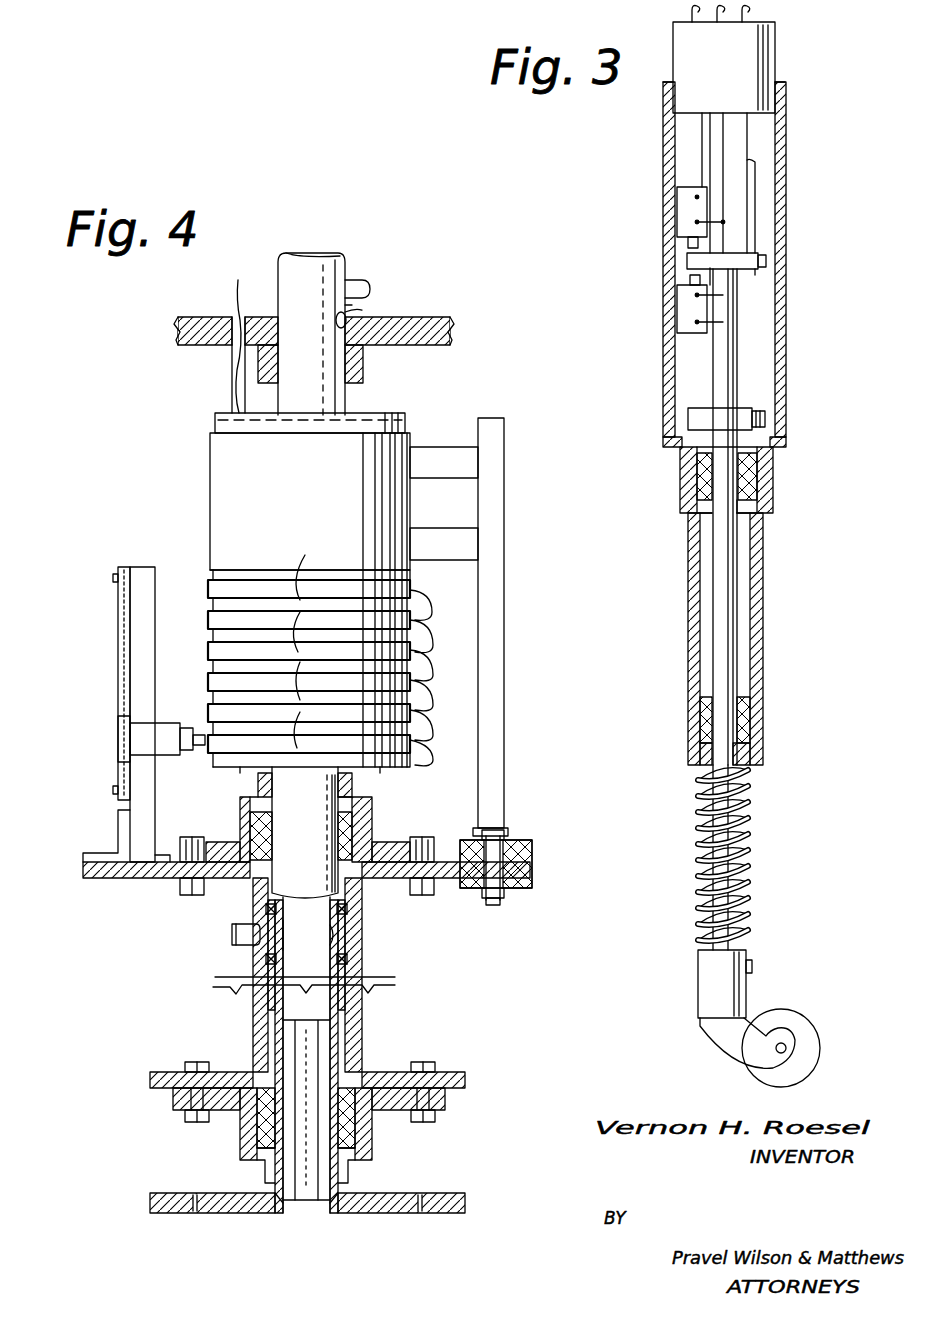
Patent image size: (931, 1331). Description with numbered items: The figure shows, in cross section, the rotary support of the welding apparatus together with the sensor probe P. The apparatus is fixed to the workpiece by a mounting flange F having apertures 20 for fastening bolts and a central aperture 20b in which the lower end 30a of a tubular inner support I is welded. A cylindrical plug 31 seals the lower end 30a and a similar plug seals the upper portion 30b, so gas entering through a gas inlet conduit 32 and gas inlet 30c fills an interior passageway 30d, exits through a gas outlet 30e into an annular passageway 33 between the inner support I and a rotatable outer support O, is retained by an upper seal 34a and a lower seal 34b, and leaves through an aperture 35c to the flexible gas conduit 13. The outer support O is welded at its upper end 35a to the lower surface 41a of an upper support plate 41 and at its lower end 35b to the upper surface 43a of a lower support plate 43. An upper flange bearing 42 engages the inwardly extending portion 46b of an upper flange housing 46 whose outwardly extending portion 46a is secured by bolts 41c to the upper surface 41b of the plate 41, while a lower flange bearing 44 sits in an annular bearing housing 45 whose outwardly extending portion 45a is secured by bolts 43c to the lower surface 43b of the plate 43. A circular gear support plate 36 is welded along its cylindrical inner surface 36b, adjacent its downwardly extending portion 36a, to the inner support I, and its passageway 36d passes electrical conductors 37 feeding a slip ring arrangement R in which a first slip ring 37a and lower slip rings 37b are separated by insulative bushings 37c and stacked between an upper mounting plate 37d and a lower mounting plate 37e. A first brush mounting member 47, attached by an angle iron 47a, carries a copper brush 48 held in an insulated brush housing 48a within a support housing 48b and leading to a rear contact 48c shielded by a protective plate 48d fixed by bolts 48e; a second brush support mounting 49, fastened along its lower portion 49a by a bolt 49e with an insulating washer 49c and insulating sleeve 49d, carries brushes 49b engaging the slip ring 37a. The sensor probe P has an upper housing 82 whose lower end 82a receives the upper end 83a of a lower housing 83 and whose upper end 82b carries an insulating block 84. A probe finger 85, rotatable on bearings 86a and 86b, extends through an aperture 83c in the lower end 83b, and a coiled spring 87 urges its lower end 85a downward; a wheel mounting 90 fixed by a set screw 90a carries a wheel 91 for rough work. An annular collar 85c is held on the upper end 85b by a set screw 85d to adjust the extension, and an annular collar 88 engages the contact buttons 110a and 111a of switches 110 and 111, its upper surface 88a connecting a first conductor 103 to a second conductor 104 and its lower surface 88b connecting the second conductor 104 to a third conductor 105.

In FIG. 4, the flexible gas conduit 13 is at (232, 932).
In FIG. 4, the apertures 20 is at (197, 1195).
In FIG. 4, the aperture 20b is at (332, 1213).
In FIG. 4, the lower end of inner support 30a is at (270, 1214).
In FIG. 4, the upper portion of inner support 30b is at (290, 250).
In FIG. 4, the gas inlet 30c is at (338, 312).
In FIG. 4, the interior passageway 30d is at (305, 905).
In FIG. 4, the gas outlet 30e is at (336, 936).
In FIG. 4, the cylindrical plug 31 is at (312, 1040).
In FIG. 4, the gas inlet conduit 32 is at (358, 283).
In FIG. 4, the annular passageway 33 is at (348, 942).
In FIG. 4, the upper O-ring 34a is at (348, 908).
In FIG. 4, the lower O-ring 34b is at (348, 960).
In FIG. 4, the upper end of outer support 35a is at (253, 906).
In FIG. 4, the lower end of outer support 35b is at (255, 1030).
In FIG. 4, the aperture 35c is at (258, 958).
In FIG. 4, the circular gear support plate 36 is at (176, 330).
In FIG. 4, the downwardly extending portion 36a is at (364, 372).
In FIG. 4, the cylindrical inner surface 36b is at (352, 313).
In FIG. 4, the passageway 36d is at (232, 322).
In FIG. 4, the electrical conductors 37 is at (232, 392).
In FIG. 4, the first conductive slip ring 37a is at (322, 512).
In FIG. 4, the conductive slip rings 37b is at (309, 650).
In FIG. 4, the insulative bushings 37c is at (408, 422).
In FIG. 4, the upper mounting plate 37d is at (372, 413).
In FIG. 4, the lower mounting plate 37e is at (402, 767).
In FIG. 4, the upper support plate 41 is at (83, 872).
In FIG. 4, the lower surface of upper support plate 41a is at (100, 880).
In FIG. 4, the upper surface of upper support plate 41b is at (162, 858).
In FIG. 4, the bolts 41c is at (194, 836).
In FIG. 4, the upper flange bearing 42 is at (360, 828).
In FIG. 4, the lower support plate 43 is at (466, 1080).
In FIG. 4, the upper surface of lower support plate 43a is at (168, 1070).
In FIG. 4, the lower surface of lower support plate 43b is at (176, 1090).
In FIG. 4, the bolts 43c is at (172, 1062).
In FIG. 4, the lower flange bearing 44 is at (358, 1125).
In FIG. 4, the annular bearing housing 45 is at (240, 1128).
In FIG. 4, the outwardly extending portion 45a is at (188, 1104).
In FIG. 4, the upper flange housing 46 is at (374, 802).
In FIG. 4, the outwardly extending portion 46a is at (386, 850).
In FIG. 4, the inwardly extending portion 46b is at (258, 800).
In FIG. 4, the first brush mounting member 47 is at (144, 566).
In FIG. 4, the angle iron 47a is at (98, 854).
In FIG. 4, the copper brushes 48 is at (198, 752).
In FIG. 4, the insulated brush housing 48a is at (186, 728).
In FIG. 4, the support housing 48b is at (140, 745).
In FIG. 4, the conductive rear contact 48c is at (124, 736).
In FIG. 4, the protective plate 48d is at (118, 626).
In FIG. 4, the bolts 48e is at (113, 578).
In FIG. 4, the second brush support mounting 49 is at (504, 622).
In FIG. 4, the lower portion 49a is at (500, 838).
In FIG. 4, the electrically conductive brushes 49b is at (420, 458).
In FIG. 4, the insulating washer 49c is at (533, 862).
In FIG. 4, the insulating sleeve 49d is at (510, 842).
In FIG. 4, the bolt 49e is at (504, 896).
In FIG. 3, the upper housing 82 is at (787, 342).
In FIG. 3, the lower end of upper housing 82a is at (682, 482).
In FIG. 3, the upper end of upper housing 82b is at (787, 96).
In FIG. 3, the lower housing 83 is at (763, 610).
In FIG. 3, the upper end of lower housing 83a is at (757, 484).
In FIG. 3, the lower end of lower housing 83b is at (690, 722).
In FIG. 3, the aperture 83c is at (740, 756).
In FIG. 3, the insulating block 84 is at (750, 46).
In FIG. 3, the sensing probe finger 85 is at (733, 382).
In FIG. 3, the lower end of probe finger 85a is at (728, 858).
In FIG. 3, the upper end of probe finger 85b is at (727, 356).
In FIG. 3, the annular collar 85c is at (755, 410).
In FIG. 3, the set screw 85d is at (765, 422).
In FIG. 3, the bearing 86a is at (745, 512).
In FIG. 3, the bearing 86b is at (745, 722).
In FIG. 3, the coiled spring 87 is at (748, 830).
In FIG. 3, the annular collar 88 is at (766, 260).
In FIG. 3, the upper surface of collar 88a is at (735, 253).
In FIG. 3, the lower surface of collar 88b is at (757, 270).
In FIG. 3, the wheel mounting 90 is at (705, 973).
In FIG. 3, the set screw 90a is at (755, 965).
In FIG. 3, the wheel 91 is at (810, 1032).
In FIG. 3, the first conductor 103 is at (702, 136).
In FIG. 3, the second conductor 104 is at (726, 146).
In FIG. 3, the third conductor 105 is at (752, 165).
In FIG. 3, the electrical contact switch 110 is at (690, 199).
In FIG. 3, the contact button 110a is at (690, 242).
In FIG. 3, the electrical contact switch 111 is at (690, 306).
In FIG. 3, the contact button 111a is at (690, 279).
In FIG. 4, the slip ring arrangement R is at (174, 474).
In FIG. 3, the sensor probe P is at (597, 260).
In FIG. 4, the inner support I is at (262, 1010).
In FIG. 4, the outer support O is at (360, 1000).
In FIG. 4, the mounting flange F is at (440, 1195).